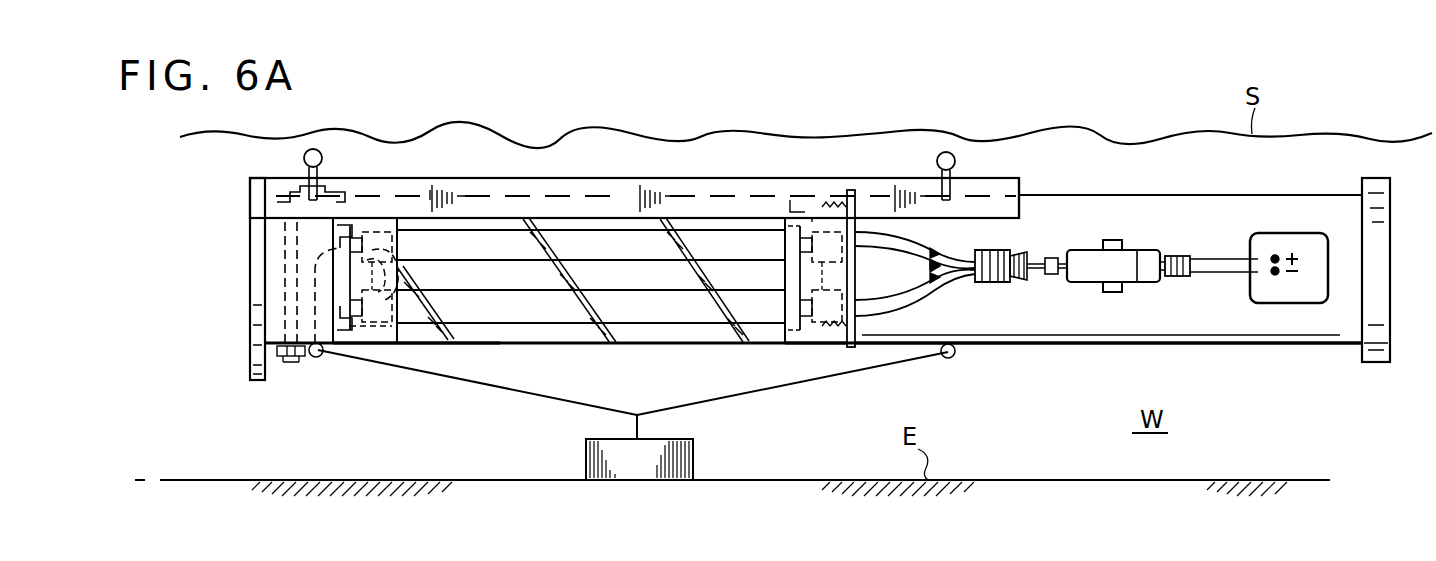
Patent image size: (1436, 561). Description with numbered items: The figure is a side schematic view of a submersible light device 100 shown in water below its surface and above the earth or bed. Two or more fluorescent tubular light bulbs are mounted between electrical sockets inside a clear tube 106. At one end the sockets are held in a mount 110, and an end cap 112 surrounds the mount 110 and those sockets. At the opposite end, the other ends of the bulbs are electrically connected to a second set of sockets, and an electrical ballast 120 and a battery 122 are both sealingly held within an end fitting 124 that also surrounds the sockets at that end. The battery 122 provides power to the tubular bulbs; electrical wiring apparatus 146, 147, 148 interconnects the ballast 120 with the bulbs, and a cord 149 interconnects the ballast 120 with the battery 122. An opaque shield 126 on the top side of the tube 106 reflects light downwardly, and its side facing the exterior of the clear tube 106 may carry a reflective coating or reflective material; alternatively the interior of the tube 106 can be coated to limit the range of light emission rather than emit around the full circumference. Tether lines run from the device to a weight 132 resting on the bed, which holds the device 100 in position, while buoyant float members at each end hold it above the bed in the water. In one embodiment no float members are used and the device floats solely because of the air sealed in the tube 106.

The submersible light device 100 is at (248, 292).
The clear tube 106 is at (427, 345).
The mount 110 is at (338, 348).
The end cap 112 is at (352, 348).
The electrical ballast 120 is at (1088, 258).
The battery 122 is at (1290, 305).
The end fitting 124 is at (1067, 345).
The opaque shield 126 is at (990, 195).
The weight 132 is at (586, 455).
The electrical wiring apparatus 146 is at (920, 245).
The electrical wiring apparatus 147 is at (397, 267).
The electrical wiring apparatus 148 is at (937, 285).
The cord 149 is at (1185, 280).